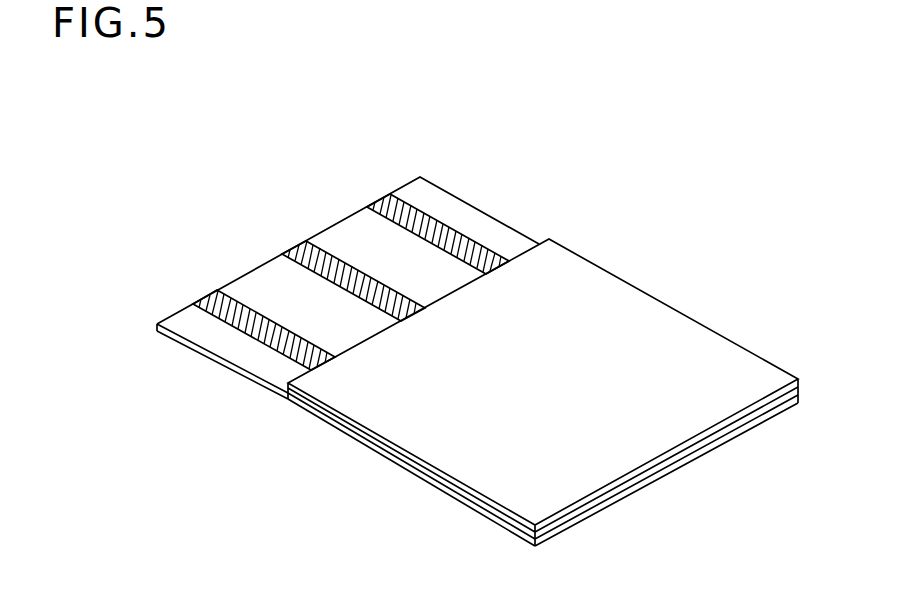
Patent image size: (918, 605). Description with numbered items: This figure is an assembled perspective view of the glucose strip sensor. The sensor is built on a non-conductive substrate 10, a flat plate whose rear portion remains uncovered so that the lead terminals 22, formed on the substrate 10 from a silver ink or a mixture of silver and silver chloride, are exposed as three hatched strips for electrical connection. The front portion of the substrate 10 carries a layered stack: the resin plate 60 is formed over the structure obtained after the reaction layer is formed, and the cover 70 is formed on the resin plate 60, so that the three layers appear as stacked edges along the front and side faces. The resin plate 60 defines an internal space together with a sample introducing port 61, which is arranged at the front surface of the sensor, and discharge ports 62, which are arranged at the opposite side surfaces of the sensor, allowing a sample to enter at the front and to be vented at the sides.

The non-conductive substrate 10 is at (347, 435).
The lead terminals 22 is at (315, 252).
The resin plate 60 is at (502, 522).
The sample introducing port 61 is at (657, 470).
The discharge ports 62 is at (407, 468).
The cover 70 is at (465, 503).